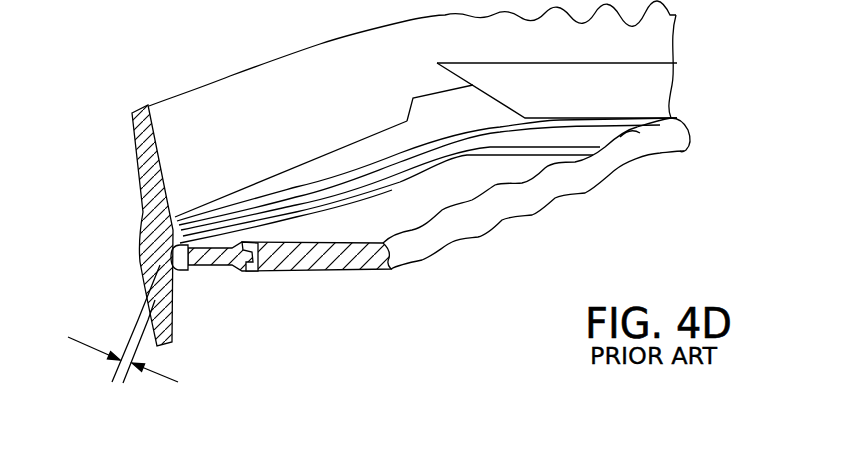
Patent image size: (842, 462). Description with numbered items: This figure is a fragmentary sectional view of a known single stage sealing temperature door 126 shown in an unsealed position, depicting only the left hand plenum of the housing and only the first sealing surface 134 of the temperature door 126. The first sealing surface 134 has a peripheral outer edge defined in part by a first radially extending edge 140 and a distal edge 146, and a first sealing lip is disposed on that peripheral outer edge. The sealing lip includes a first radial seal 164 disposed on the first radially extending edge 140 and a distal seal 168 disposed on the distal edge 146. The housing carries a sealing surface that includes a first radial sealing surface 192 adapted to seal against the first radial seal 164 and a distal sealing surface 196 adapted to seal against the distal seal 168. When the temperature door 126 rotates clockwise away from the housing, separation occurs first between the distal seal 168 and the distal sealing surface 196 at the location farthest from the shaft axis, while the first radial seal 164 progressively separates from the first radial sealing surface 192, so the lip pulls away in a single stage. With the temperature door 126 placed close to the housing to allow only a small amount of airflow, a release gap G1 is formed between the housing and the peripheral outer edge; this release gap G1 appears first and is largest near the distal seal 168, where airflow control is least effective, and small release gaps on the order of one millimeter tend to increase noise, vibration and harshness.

The temperature door 126 is at (385, 202).
The first sealing surface 134 is at (322, 258).
The first radially extending edge 140 is at (323, 190).
The distal edge 146 is at (515, 157).
The first radial seal 164 is at (168, 256).
The distal seal 168 is at (688, 152).
The first radial sealing surface 192 is at (196, 222).
The distal sealing surface 196 is at (653, 86).
The release gap G1 is at (85, 344).